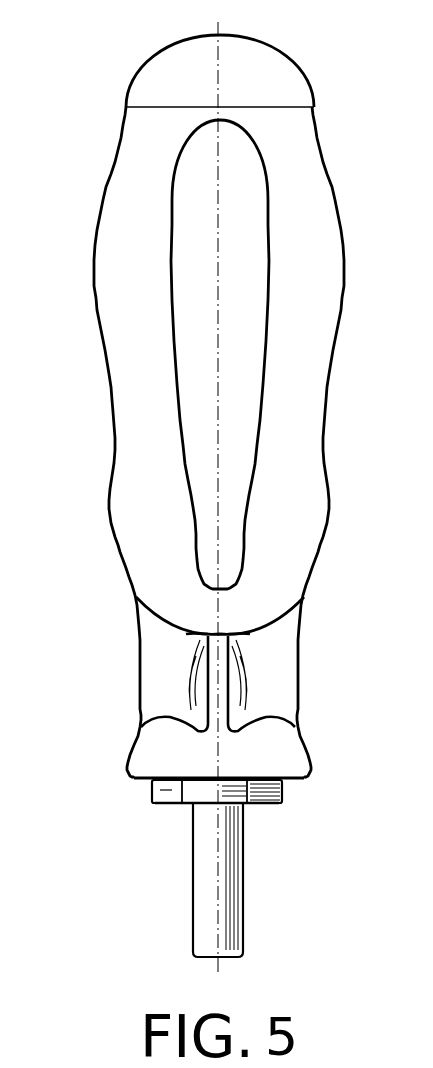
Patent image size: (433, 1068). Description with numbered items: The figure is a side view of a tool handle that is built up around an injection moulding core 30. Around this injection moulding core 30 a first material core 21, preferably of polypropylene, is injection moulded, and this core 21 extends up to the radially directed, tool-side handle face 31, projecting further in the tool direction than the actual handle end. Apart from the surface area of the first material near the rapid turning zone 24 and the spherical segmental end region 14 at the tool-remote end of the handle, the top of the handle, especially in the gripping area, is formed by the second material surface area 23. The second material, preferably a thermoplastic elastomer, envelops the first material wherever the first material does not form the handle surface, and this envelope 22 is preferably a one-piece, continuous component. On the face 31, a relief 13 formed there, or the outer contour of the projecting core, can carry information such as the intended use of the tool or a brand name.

The end cap of handle 14 is at (263, 63).
The second material surface area 23 is at (101, 360).
The envelope 22 is at (137, 526).
The rapid turning zone 24 is at (165, 662).
The first material core 21 is at (150, 788).
The relief 13 is at (183, 805).
The tool-side handle face 31 is at (250, 804).
The injection moulding core 30 is at (210, 913).